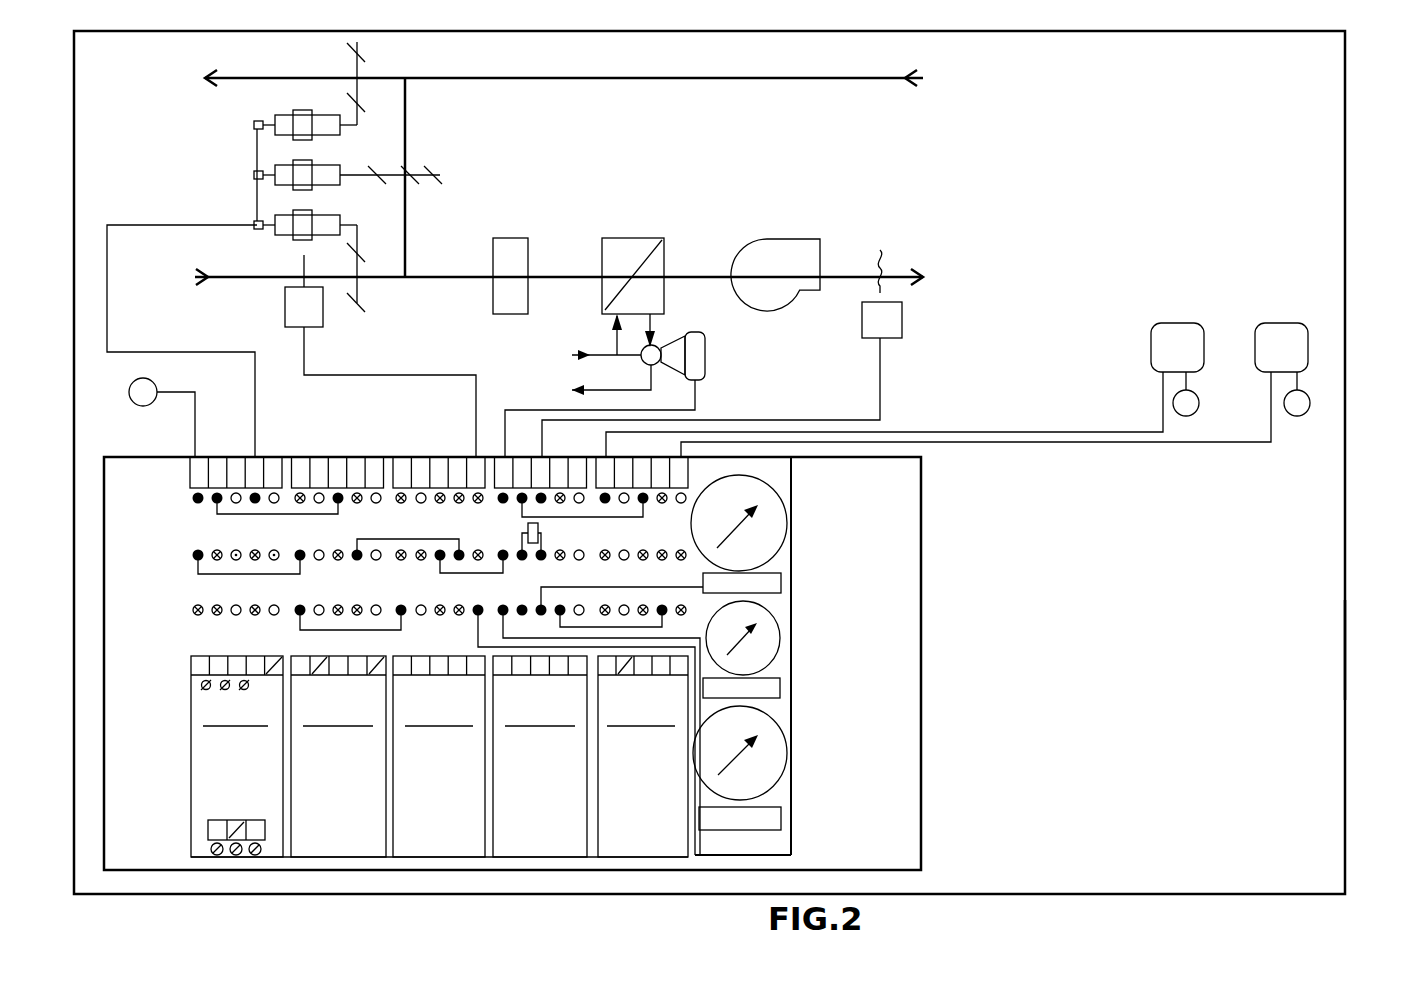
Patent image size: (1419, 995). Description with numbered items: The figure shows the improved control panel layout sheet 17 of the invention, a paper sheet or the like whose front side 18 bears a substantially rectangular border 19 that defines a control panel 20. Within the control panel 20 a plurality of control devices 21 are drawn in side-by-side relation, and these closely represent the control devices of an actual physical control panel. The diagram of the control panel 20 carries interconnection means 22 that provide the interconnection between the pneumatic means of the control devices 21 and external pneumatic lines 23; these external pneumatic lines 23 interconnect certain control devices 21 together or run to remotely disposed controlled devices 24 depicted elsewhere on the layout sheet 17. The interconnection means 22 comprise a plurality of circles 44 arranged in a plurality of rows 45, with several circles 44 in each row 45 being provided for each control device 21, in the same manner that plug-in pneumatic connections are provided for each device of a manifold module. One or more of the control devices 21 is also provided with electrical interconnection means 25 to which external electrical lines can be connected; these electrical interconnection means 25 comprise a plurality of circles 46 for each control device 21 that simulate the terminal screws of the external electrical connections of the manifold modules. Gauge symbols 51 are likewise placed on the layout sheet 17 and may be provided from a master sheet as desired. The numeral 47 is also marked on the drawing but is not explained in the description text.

The control panel layout sheet 17 is at (1322, 552).
The front side 18 is at (1322, 643).
The rectangular border 19 is at (921, 540).
The control panel 20 is at (900, 622).
The control devices 21 is at (418, 799).
The interconnection means 22 is at (176, 588).
The external pneumatic lines 23 is at (258, 425).
The controlled devices 24 is at (330, 170).
The electrical interconnection means 25 is at (176, 852).
The circles 44 is at (216, 620).
The rows 45 is at (359, 568).
The circles 46 is at (255, 857).
The relay modules 47 is at (418, 796).
The gauge symbols 51 is at (770, 490).